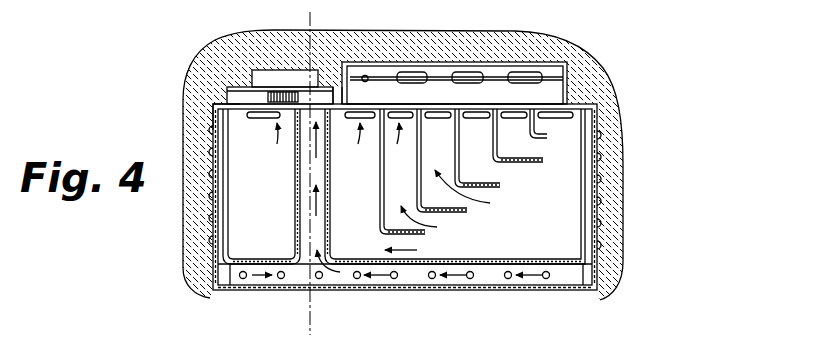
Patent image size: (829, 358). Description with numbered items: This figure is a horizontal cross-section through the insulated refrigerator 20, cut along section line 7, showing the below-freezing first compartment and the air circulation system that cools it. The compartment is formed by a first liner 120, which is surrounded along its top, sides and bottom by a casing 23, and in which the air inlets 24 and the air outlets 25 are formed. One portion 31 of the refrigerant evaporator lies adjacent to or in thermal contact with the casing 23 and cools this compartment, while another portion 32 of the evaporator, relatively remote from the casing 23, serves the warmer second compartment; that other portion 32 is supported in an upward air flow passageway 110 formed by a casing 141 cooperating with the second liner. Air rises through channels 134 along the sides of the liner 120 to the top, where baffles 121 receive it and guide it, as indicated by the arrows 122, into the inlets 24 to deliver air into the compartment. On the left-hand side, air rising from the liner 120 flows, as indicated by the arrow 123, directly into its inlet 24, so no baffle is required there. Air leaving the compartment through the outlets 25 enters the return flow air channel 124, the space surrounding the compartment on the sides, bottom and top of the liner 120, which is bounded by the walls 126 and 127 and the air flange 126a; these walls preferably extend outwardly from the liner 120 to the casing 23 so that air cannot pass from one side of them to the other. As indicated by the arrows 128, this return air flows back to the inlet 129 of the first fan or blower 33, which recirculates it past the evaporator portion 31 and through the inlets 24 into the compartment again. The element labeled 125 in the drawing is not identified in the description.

The insulated refrigerator 20 is at (613, 92).
The first liner 120 is at (570, 210).
The casing 23 is at (215, 117).
The channels 134 is at (222, 247).
The air flange 126a is at (350, 290).
The evaporator portion 31 is at (603, 178).
The first fan 33 is at (262, 90).
The inlet 129 is at (327, 97).
The casing 141 is at (456, 62).
The upward air flow passageway 110 is at (498, 72).
The evaporator portion 32 is at (533, 74).
The section line 7 is at (336, 15).
The arrow 123 is at (222, 172).
The main liner 125 is at (331, 240).
The wall 127 is at (295, 225).
The wall 126 is at (252, 247).
The baffles 121 is at (381, 225).
The arrows 122 is at (469, 196).
The inlets 24 is at (267, 121).
The return flow air channel 124 is at (413, 279).
The outlets 25 is at (243, 278).
The arrows 128 is at (315, 206).